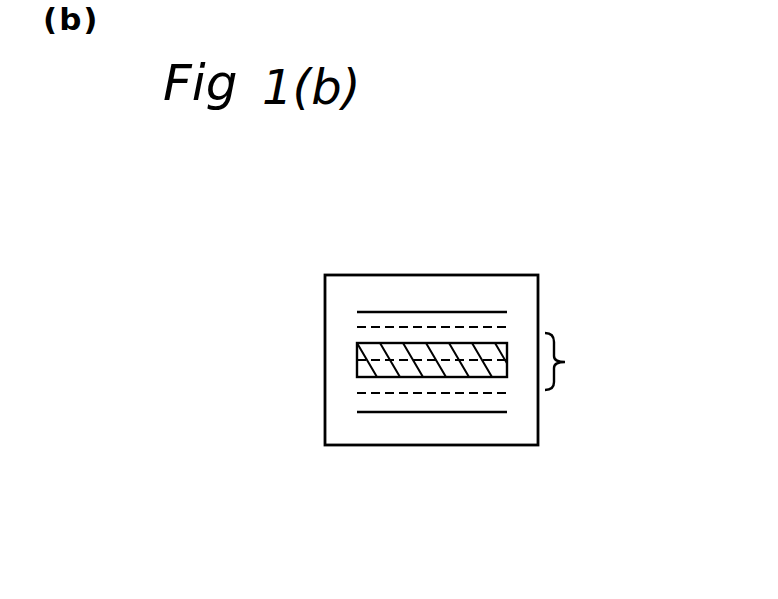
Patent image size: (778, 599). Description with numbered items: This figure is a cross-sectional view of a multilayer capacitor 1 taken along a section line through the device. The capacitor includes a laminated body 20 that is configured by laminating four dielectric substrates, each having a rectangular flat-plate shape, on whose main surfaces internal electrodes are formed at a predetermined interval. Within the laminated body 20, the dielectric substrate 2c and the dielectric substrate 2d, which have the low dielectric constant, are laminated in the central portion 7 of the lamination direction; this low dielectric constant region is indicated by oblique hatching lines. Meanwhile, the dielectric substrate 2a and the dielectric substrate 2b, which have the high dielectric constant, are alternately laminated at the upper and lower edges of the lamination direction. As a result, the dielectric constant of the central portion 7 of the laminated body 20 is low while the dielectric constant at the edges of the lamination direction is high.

The multilayer capacitor 1 is at (463, 123).
The laminated body 20 is at (357, 275).
The dielectric substrate 2a is at (425, 315).
The dielectric substrate 2b is at (488, 338).
The dielectric substrate 2c is at (382, 375).
The dielectric substrate 2d is at (448, 348).
The central portion 7 is at (565, 361).